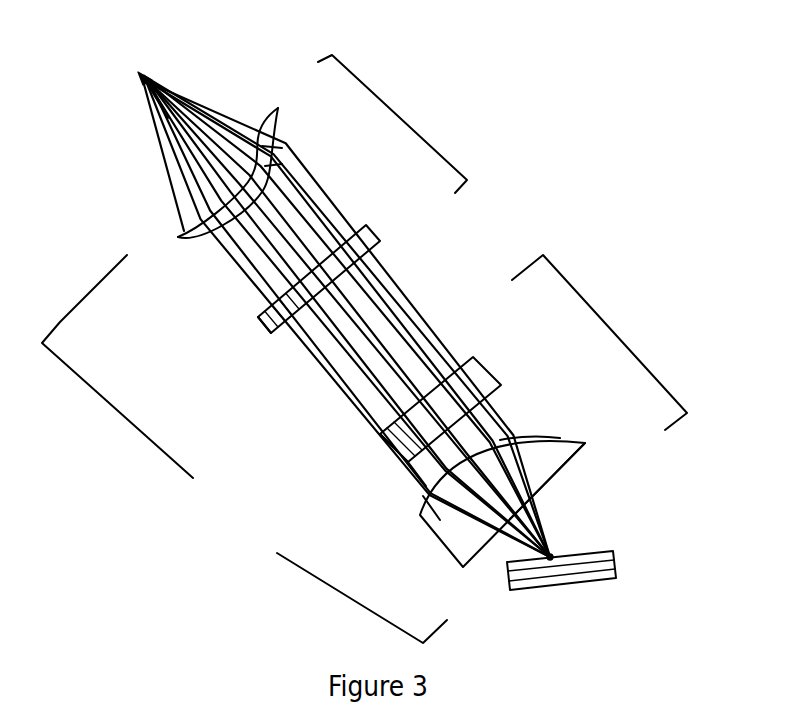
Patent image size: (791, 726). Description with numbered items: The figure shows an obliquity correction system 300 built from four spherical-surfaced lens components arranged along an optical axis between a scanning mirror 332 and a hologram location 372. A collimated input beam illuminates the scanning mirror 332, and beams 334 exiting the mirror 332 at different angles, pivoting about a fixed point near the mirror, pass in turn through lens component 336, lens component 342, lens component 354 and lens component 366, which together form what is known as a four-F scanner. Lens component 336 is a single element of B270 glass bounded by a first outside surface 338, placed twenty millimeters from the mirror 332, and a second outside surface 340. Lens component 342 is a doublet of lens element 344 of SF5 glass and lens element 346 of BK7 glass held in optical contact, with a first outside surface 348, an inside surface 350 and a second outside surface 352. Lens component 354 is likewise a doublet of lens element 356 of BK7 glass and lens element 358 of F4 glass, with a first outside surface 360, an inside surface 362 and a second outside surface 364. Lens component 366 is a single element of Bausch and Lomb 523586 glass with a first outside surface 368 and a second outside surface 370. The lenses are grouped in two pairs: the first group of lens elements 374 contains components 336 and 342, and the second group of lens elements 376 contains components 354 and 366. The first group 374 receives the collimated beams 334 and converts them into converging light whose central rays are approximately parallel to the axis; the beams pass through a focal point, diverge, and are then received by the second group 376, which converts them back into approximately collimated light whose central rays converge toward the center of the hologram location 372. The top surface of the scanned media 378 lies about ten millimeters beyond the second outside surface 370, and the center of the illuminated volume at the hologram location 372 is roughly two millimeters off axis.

The obliquity correction system 300 is at (244, 449).
The scanning mirror 332 is at (147, 77).
The beams 334 is at (162, 118).
The lens component 336 is at (277, 142).
The first outside surface 338 is at (278, 108).
The second outside surface 340 is at (277, 163).
The lens component 342 is at (357, 207).
The lens element 344 is at (264, 317).
The lens element 346 is at (270, 337).
The first outside surface 348 is at (258, 314).
The inside surface 350 is at (281, 331).
The second outside surface 352 is at (284, 333).
The lens component 354 is at (470, 343).
The lens element 356 is at (383, 450).
The lens element 358 is at (397, 467).
The first outside surface 360 is at (387, 433).
The inside surface 362 is at (423, 490).
The second outside surface 364 is at (433, 517).
The lens component 366 is at (583, 447).
The first outside surface 368 is at (550, 433).
The second outside surface 370 is at (563, 473).
The hologram location 372 is at (566, 553).
The first group of lens elements 374 is at (396, 114).
The second group of lens elements 376 is at (615, 334).
The scanned media 378 is at (613, 558).